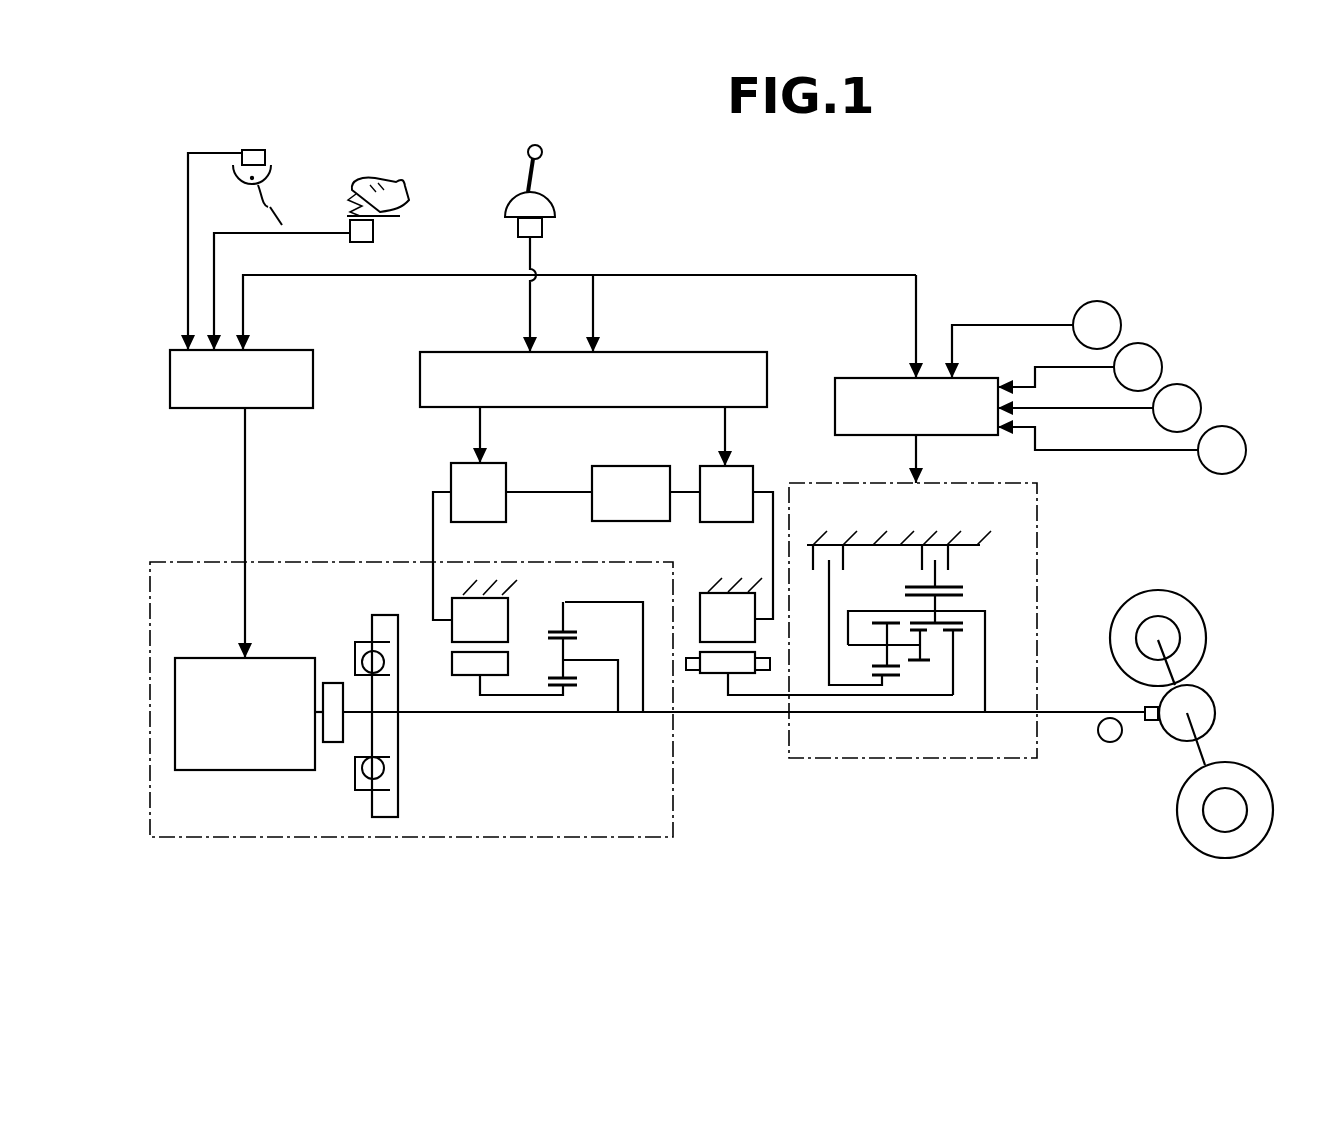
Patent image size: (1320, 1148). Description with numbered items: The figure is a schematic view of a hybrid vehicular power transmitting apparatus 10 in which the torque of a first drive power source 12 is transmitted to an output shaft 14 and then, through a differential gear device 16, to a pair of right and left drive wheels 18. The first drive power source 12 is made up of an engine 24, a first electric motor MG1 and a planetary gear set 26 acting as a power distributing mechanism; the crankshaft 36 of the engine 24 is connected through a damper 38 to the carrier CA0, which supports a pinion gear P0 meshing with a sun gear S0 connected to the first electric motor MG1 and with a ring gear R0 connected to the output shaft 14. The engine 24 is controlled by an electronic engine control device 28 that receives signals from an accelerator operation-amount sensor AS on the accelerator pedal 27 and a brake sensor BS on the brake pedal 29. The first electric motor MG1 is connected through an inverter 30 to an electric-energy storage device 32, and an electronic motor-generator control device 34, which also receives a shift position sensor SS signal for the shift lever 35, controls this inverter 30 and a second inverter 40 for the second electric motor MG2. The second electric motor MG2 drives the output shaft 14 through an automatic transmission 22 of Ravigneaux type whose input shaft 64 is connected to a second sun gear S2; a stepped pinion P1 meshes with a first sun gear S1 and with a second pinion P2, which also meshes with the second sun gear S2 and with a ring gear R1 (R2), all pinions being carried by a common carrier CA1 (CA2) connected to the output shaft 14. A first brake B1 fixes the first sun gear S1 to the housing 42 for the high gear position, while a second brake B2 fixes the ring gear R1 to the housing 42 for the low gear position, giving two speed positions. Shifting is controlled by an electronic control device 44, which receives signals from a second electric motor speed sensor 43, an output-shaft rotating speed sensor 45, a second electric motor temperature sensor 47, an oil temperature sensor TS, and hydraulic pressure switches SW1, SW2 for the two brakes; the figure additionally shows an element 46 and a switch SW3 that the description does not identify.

The vehicular power transmitting apparatus 10 is at (1030, 192).
The first drive power source 12 is at (600, 840).
The output shaft 14 is at (1060, 715).
The differential gear device 16 is at (1200, 703).
The drive wheels 18 is at (1193, 623).
The automatic transmission 22 is at (1045, 502).
The engine 24 is at (250, 762).
The planetary gear set 26 is at (543, 723).
The accelerator pedal 27 is at (347, 190).
The electronic engine control device 28 is at (284, 360).
The brake pedal 29 is at (265, 198).
The inverter 30 is at (498, 472).
The electric-energy storage device 32 is at (619, 475).
The electronic motor-generator control device 34 is at (738, 360).
The shift lever 35 is at (541, 160).
The crankshaft 36 is at (322, 727).
The damper 38 is at (360, 790).
The inverter 40 is at (737, 475).
The housing 42 is at (893, 536).
The second electric motor speed sensor 43 is at (690, 668).
The electronic control device 44 is at (969, 386).
The output-shaft rotating speed sensor 45 is at (1112, 743).
The damper 46 is at (338, 688).
The second electric motor temperature sensor 47 is at (765, 672).
The input shaft 64 is at (835, 697).
The brake sensor BS is at (257, 150).
The accelerator operation-amount sensor AS is at (373, 228).
The shift position sensor SS is at (543, 227).
The oil temperature sensor TS is at (1097, 325).
The hydraulic pressure switch SW1 is at (1138, 367).
The hydraulic pressure switch SW2 is at (1177, 408).
The switch 3 SW3 is at (1222, 450).
The first electric motor MG1 is at (484, 611).
The second electric motor MG2 is at (731, 610).
The ring gear R0 is at (559, 628).
The pinion gear P0 is at (554, 678).
The sun gear S0 is at (572, 688).
The carrier CA0 is at (580, 658).
The first brake B1 is at (828, 547).
The second brake B2 is at (948, 547).
The common carrier CA1 is at (848, 625).
The common carrier CA2 is at (866, 622).
The ring gear R1 is at (963, 590).
The ring gear R2 is at (977, 570).
The stepped pinion P1 is at (928, 661).
The second pinion P2 is at (963, 597).
The first sun gear S1 is at (880, 676).
The second sun gear S2 is at (957, 632).